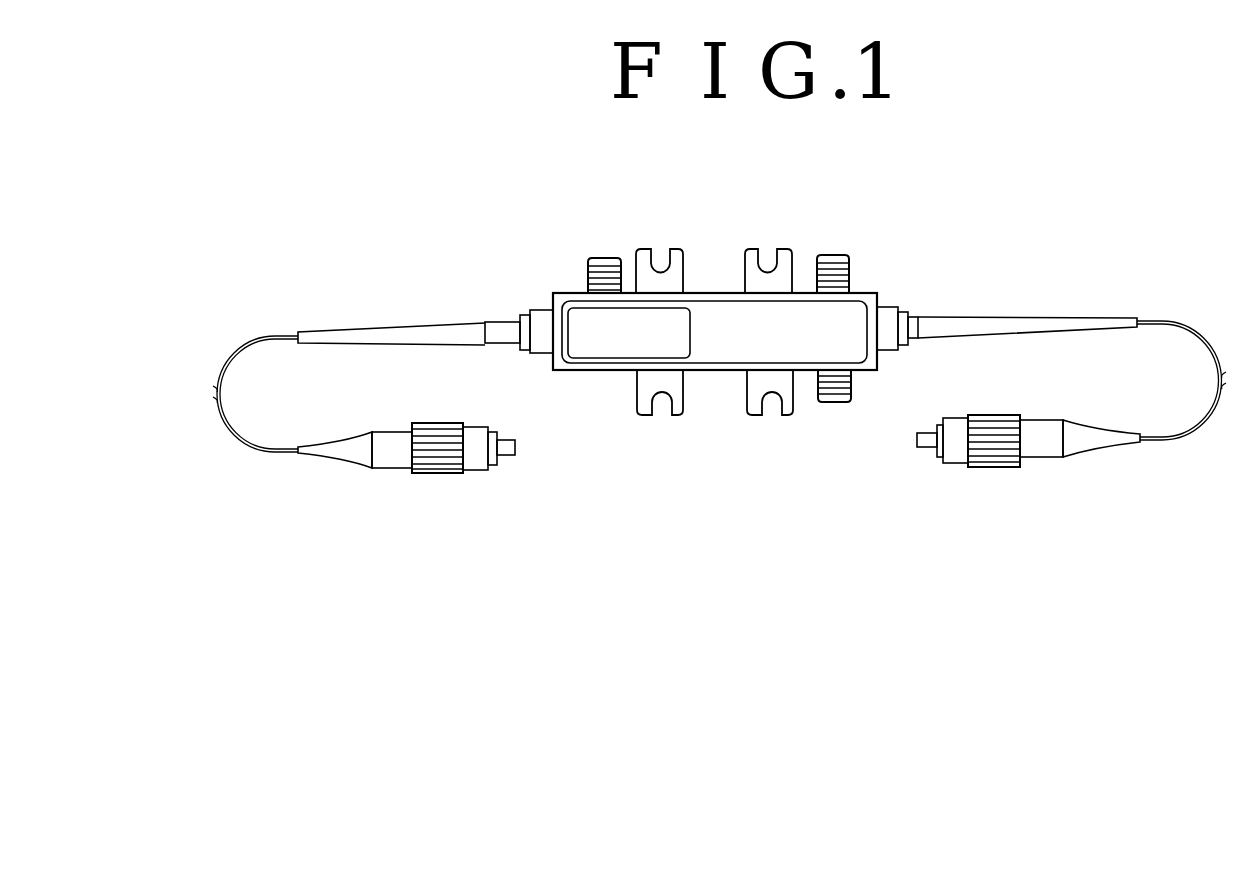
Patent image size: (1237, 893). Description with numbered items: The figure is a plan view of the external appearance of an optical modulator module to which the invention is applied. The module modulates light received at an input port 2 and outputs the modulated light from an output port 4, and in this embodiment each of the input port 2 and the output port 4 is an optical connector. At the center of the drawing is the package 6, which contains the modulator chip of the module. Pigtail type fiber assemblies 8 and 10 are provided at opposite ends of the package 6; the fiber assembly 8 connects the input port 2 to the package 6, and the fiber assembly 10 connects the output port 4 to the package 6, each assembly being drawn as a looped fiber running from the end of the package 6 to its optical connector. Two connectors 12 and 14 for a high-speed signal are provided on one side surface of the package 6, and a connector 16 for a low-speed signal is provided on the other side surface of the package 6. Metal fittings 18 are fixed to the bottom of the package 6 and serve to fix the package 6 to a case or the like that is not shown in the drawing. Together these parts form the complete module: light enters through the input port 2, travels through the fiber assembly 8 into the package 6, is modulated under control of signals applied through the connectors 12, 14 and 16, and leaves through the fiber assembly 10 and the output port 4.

The input port 2 is at (505, 453).
The output port 4 is at (923, 447).
The package 6 is at (865, 293).
The pigtail type fiber assembly 8 is at (537, 317).
The pigtail type fiber assembly 10 is at (887, 313).
The connector for a high-speed signal 12 is at (598, 259).
The connector for a high-speed signal 14 is at (832, 255).
The connector for a low-speed signal 16 is at (833, 405).
The metal fittings 18 is at (658, 273).